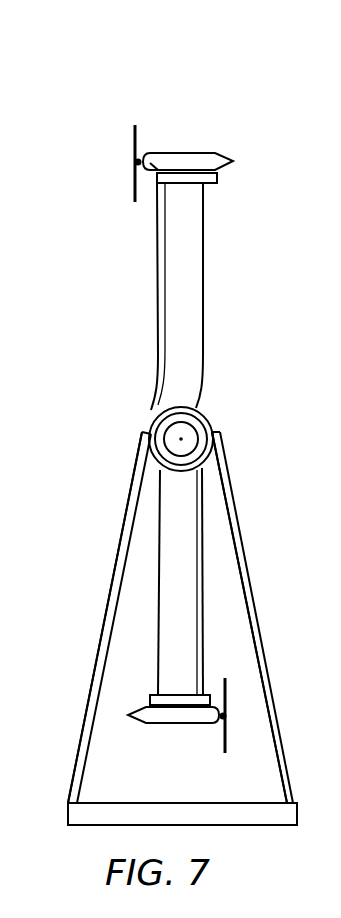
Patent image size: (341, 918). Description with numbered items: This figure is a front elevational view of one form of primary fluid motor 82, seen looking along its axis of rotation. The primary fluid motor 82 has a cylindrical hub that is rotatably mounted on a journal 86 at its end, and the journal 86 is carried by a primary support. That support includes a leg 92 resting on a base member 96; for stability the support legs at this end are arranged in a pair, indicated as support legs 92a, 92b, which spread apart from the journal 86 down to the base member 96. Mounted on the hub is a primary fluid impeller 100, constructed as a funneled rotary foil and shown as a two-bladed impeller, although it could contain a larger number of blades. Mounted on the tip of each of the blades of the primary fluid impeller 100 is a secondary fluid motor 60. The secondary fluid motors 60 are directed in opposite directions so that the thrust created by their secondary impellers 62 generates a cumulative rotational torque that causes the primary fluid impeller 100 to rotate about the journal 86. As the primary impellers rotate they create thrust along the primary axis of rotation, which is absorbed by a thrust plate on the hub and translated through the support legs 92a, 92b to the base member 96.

The secondary fluid motor 60 is at (185, 153).
The secondary impeller 62 is at (137, 148).
The primary fluid motor 82 is at (230, 333).
The journal 86 is at (192, 428).
The leg 92 is at (204, 617).
The support leg 92a is at (256, 615).
The support leg 92b is at (112, 600).
The base member 96 is at (128, 803).
The primary fluid impeller 100 is at (203, 248).